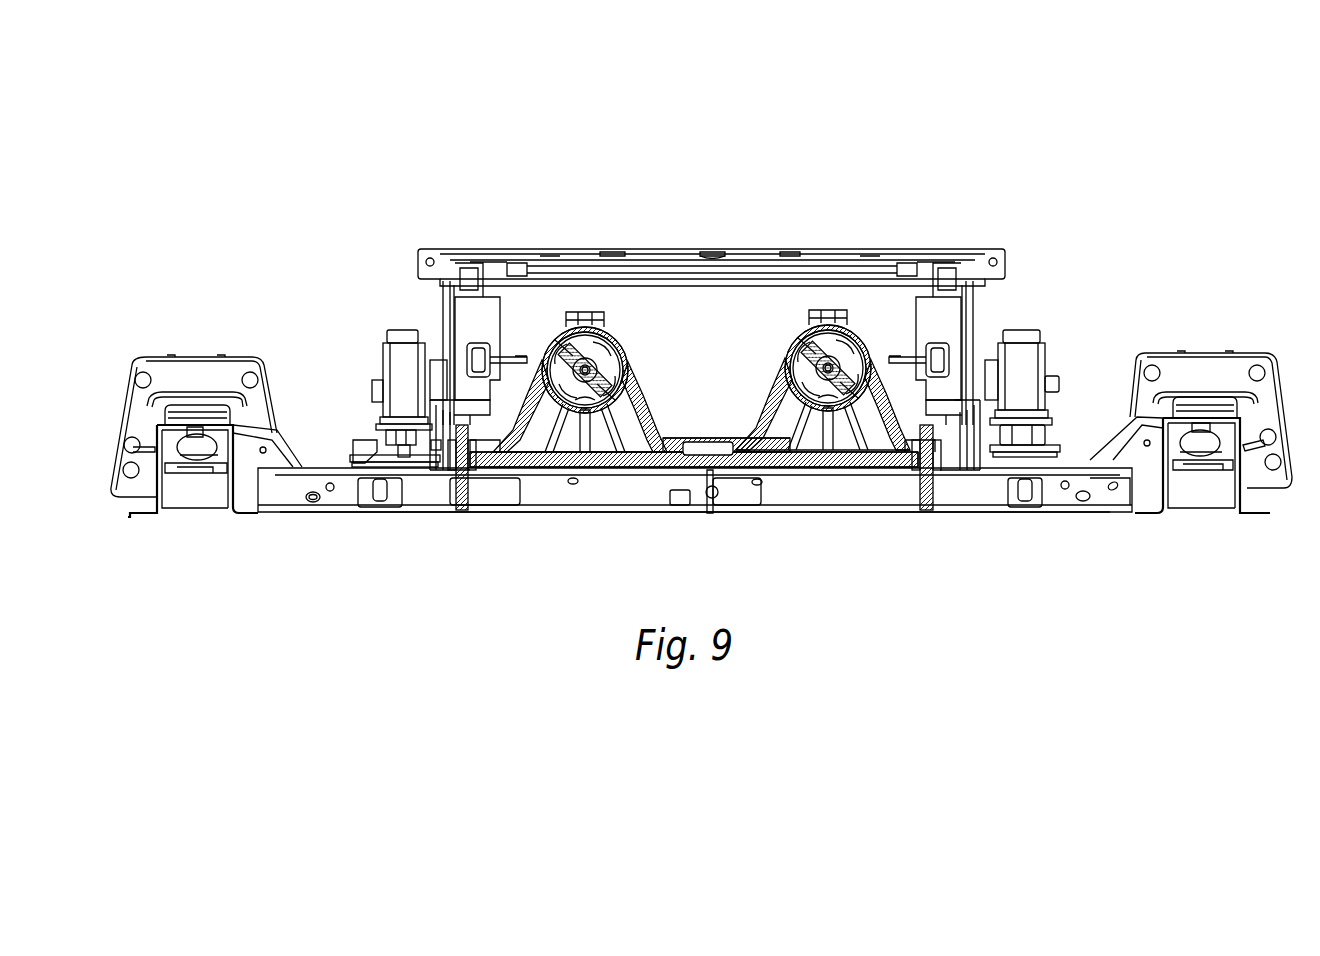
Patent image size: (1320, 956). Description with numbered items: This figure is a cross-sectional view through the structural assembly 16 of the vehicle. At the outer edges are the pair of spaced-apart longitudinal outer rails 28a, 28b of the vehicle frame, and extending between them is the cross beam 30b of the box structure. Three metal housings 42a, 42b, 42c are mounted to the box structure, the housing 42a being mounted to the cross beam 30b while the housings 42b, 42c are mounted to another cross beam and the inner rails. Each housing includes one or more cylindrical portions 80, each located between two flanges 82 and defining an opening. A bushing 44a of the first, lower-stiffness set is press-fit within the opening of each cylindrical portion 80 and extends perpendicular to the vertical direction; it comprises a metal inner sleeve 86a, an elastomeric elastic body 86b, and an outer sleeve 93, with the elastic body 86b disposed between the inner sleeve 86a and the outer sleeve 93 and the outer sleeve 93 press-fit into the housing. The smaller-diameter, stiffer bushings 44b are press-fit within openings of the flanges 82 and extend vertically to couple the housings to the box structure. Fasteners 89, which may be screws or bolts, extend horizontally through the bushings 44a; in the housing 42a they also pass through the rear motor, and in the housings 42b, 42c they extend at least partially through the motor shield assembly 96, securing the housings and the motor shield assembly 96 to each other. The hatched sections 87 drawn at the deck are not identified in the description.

The structural assembly 16 is at (466, 132).
The longitudinal outer rail 28a is at (143, 475).
The longitudinal outer rail 28b is at (1256, 480).
The cross beam 30b is at (862, 495).
The housing 42a is at (767, 460).
The housing 42b is at (402, 335).
The housing 42c is at (1018, 338).
The bushing of the first set of bushings 44a is at (619, 448).
The bushing of the second set of bushings 44b is at (478, 455).
The cylindrical portion 80 is at (393, 357).
The flange 82 is at (357, 470).
The inner sleeve 86a is at (600, 367).
The elastic body 86b is at (603, 348).
The pin 87 is at (463, 502).
The fastener 89 is at (583, 365).
The outer sleeve 93 is at (630, 393).
The motor shield assembly 96 is at (709, 248).